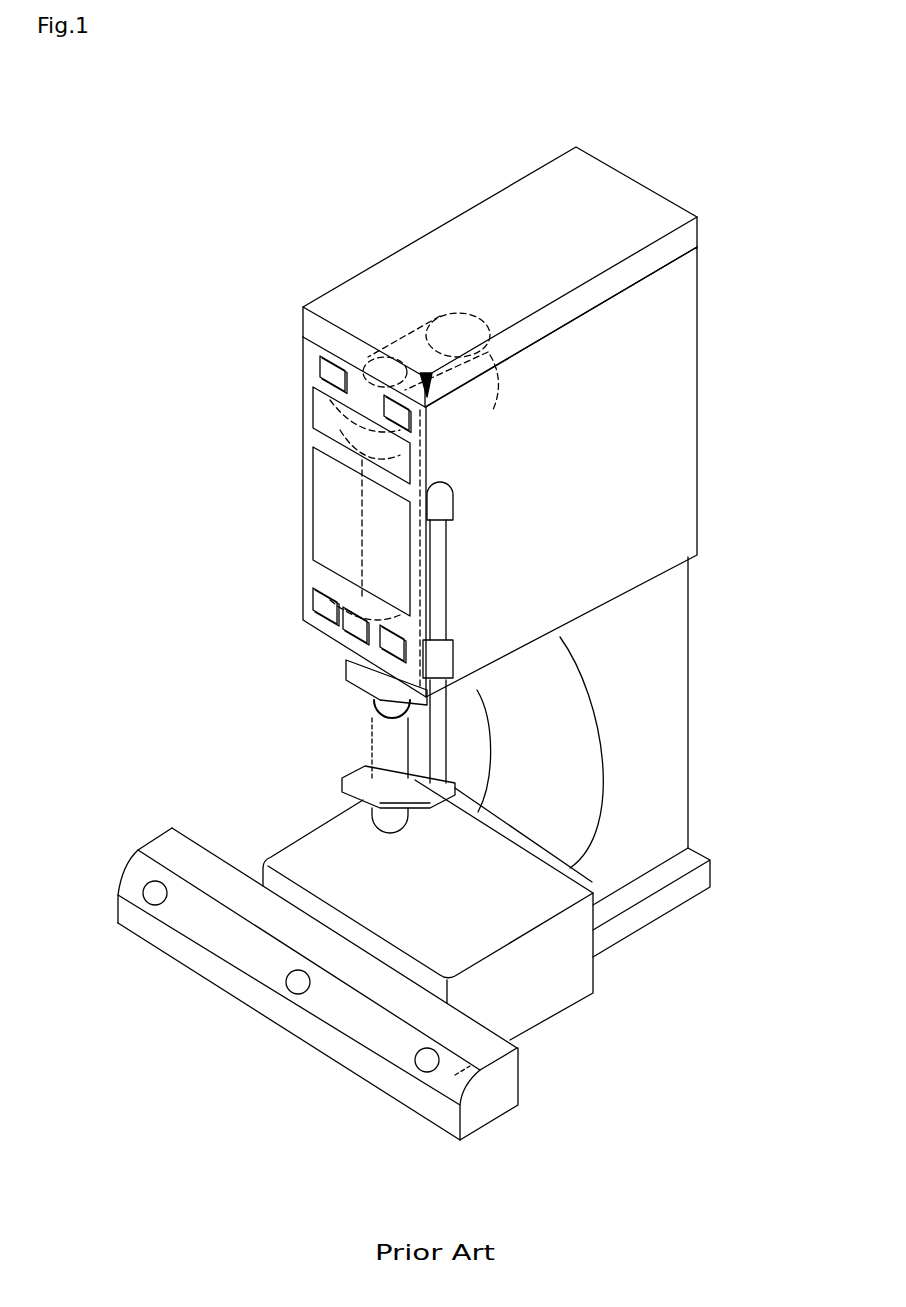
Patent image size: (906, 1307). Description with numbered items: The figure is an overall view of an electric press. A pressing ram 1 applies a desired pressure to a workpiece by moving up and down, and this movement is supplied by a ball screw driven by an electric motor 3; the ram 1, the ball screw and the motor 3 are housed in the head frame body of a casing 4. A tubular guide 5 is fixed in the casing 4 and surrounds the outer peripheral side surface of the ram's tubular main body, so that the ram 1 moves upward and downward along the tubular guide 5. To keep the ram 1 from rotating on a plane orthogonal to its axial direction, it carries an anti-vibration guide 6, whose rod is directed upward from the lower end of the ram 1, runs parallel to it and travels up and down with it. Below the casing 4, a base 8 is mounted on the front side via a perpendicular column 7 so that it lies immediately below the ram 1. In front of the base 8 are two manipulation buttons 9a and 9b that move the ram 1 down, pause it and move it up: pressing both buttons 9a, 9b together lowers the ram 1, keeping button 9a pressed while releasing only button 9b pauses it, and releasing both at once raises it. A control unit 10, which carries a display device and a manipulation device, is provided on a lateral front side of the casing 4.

The pressing ram 1 is at (375, 703).
The electric motor 3 is at (472, 383).
The casing 4 is at (698, 430).
The tubular guide 5 is at (362, 537).
The anti-vibration guide 6 is at (447, 562).
The perpendicular column 7 is at (670, 800).
The base 8 is at (318, 847).
The manipulation button 9a is at (155, 900).
The manipulation button 9b is at (427, 1068).
The control unit 10 is at (312, 473).